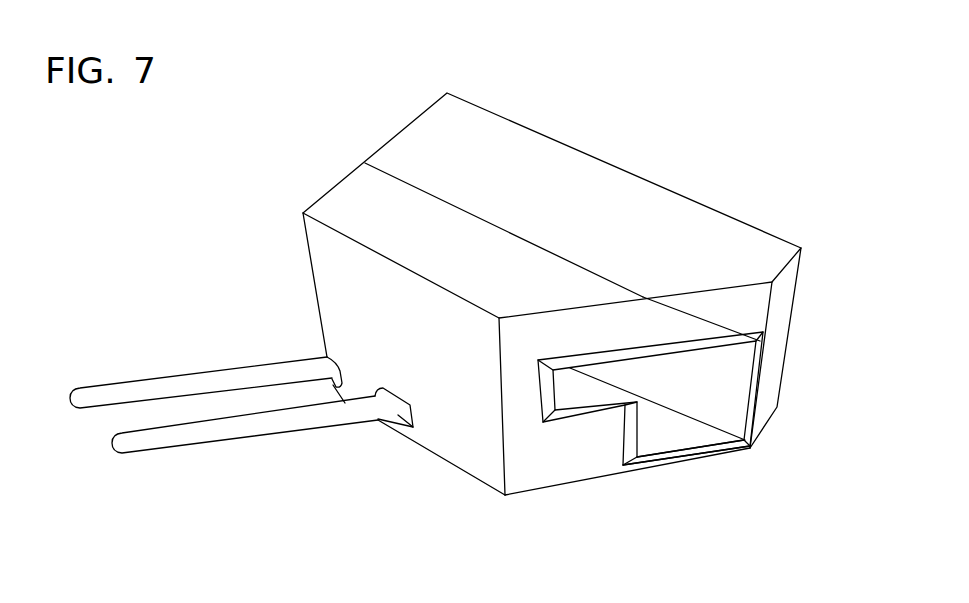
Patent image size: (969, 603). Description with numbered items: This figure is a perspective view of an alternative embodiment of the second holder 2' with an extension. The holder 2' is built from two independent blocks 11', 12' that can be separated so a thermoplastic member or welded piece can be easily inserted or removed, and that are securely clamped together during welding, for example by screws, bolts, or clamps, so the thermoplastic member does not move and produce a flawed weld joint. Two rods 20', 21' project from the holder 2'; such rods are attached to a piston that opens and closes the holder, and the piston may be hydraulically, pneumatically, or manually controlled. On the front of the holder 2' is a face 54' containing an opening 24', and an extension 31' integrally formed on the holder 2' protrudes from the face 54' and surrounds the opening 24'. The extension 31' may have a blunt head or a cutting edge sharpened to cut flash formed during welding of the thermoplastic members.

The second holder 2' is at (444, 301).
The block 11' is at (552, 233).
The block 12' is at (461, 274).
The rod 20' is at (262, 462).
The rod 21' is at (185, 350).
The opening 24' is at (699, 407).
The extension 31' is at (686, 488).
The face 54' is at (564, 451).